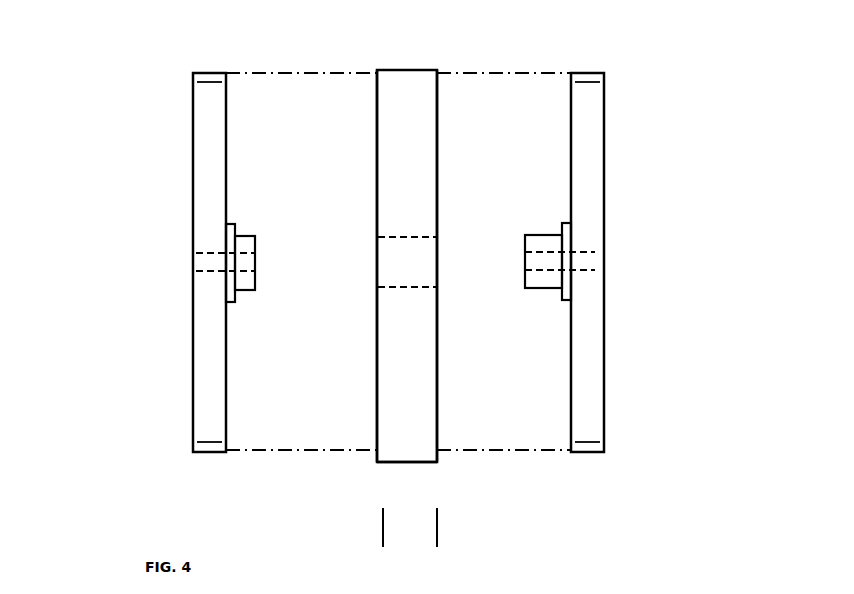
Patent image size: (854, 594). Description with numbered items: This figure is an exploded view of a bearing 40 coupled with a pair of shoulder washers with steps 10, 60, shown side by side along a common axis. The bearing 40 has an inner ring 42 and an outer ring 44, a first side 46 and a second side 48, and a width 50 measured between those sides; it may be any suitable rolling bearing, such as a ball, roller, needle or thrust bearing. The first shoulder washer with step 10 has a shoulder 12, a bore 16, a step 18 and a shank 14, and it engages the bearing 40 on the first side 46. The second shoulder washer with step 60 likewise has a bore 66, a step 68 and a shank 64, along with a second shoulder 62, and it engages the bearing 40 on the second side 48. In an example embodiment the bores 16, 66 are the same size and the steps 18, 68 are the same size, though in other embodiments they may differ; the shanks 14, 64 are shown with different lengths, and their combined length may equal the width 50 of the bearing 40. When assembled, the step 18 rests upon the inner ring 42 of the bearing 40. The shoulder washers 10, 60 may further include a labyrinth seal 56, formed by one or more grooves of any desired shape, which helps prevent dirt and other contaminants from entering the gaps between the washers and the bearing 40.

The first shoulder washer with step 10 is at (175, 45).
The first panel 12 is at (168, 188).
The shank 14 is at (251, 222).
The bore 16 is at (168, 265).
The step 18 is at (232, 303).
The bearing 40 is at (390, 42).
The inner ring 42 is at (405, 224).
The outer ring 44 is at (427, 462).
The first side 46 is at (377, 372).
The second side 48 is at (438, 394).
The width 50 is at (355, 527).
The labyrinth seal 56 is at (185, 77).
The second shoulder washer with step 60 is at (572, 45).
The second shoulder 62 is at (648, 175).
The shank 64 is at (540, 220).
The bore 66 is at (618, 262).
The step 68 is at (566, 303).